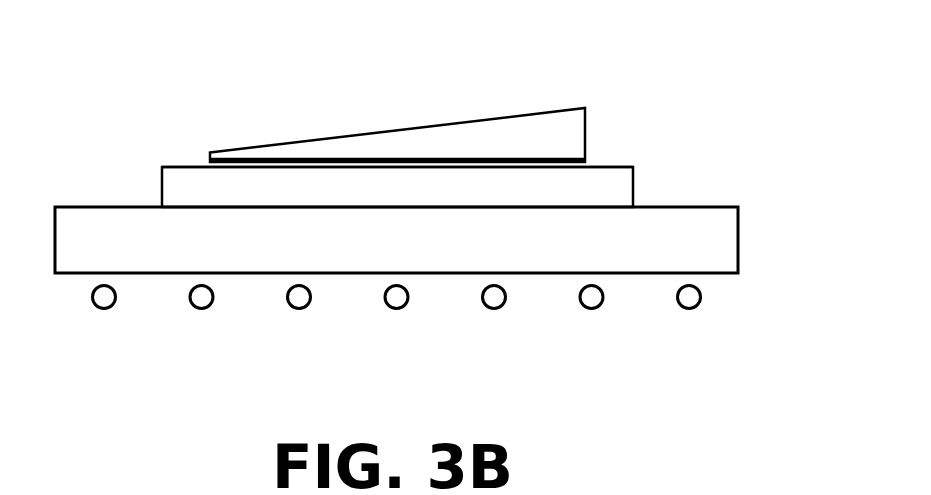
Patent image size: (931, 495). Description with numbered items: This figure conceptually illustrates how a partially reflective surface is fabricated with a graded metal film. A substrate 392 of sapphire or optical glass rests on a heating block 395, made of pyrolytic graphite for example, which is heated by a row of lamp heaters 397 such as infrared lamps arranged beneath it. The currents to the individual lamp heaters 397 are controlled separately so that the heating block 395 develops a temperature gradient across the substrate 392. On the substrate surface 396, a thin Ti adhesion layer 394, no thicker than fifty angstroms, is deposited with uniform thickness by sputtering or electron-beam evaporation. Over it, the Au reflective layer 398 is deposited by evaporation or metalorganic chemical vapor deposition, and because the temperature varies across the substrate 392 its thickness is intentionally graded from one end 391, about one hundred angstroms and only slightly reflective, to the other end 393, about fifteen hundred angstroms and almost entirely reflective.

The end 391 is at (240, 123).
The substrate 392 is at (617, 190).
The end 393 is at (552, 93).
The adhesion layer 394 is at (580, 162).
The heating block 395 is at (120, 218).
The substrate surface 396 is at (183, 165).
The lamp heaters 397 is at (110, 307).
The reflective layer 398 is at (418, 137).